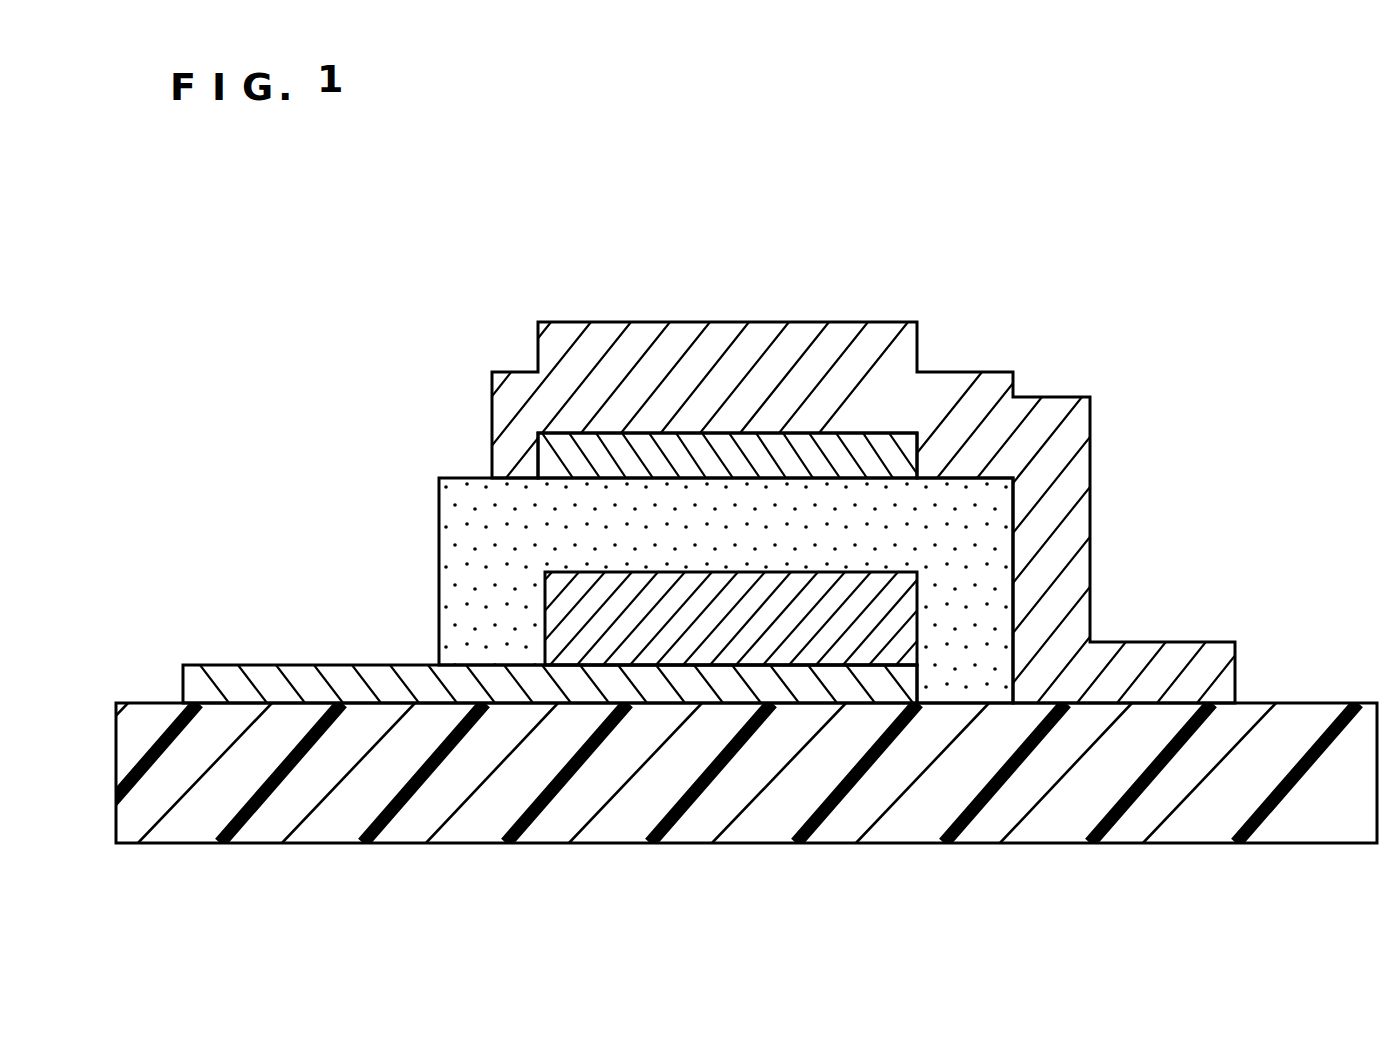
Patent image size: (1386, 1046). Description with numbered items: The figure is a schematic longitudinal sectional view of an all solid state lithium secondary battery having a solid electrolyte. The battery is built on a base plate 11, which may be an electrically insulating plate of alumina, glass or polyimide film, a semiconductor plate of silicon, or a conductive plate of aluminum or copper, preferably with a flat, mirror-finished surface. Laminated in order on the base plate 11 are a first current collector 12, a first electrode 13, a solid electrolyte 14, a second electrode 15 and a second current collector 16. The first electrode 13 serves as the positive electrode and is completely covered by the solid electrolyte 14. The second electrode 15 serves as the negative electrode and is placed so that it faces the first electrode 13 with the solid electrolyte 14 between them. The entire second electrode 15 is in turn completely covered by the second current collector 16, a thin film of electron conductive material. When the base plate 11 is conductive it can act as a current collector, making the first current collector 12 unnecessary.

The base plate 11 is at (1037, 805).
The first current collector 12 is at (208, 685).
The first electrode 13 is at (578, 607).
The solid electrolyte 14 is at (980, 600).
The second electrode 15 is at (563, 459).
The second current collector 16 is at (972, 403).